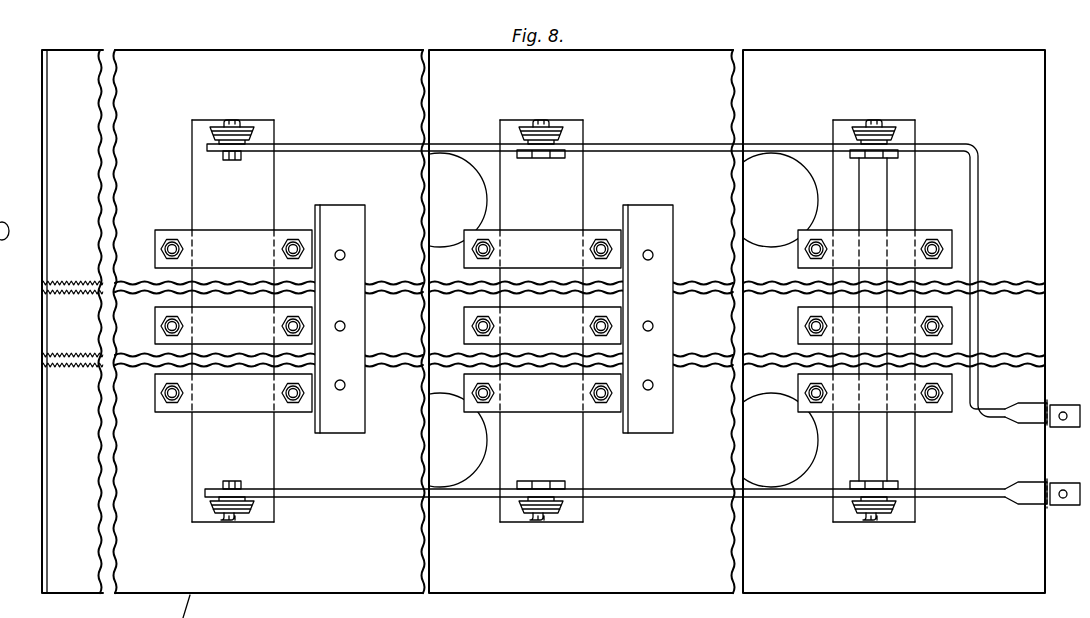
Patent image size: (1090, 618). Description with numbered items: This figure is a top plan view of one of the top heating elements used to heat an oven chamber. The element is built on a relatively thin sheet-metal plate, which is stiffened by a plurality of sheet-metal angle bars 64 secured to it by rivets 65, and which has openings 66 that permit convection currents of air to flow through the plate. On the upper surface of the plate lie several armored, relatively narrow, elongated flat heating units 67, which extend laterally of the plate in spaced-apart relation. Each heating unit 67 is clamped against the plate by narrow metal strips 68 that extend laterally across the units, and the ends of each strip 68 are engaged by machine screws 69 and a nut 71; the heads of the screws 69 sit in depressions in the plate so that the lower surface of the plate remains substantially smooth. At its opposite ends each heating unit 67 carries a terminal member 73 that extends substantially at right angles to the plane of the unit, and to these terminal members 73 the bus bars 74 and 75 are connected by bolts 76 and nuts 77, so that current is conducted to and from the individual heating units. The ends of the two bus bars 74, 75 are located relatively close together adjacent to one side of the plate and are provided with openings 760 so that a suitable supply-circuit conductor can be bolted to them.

The sheet-metal angle bar 64 is at (350, 402).
The rivet 65 is at (345, 325).
The opening 66 is at (452, 172).
The heating unit 67 is at (200, 190).
The metal strip 68 is at (280, 238).
The machine screw 69 is at (168, 254).
The nut 71 is at (161, 246).
The terminal member 73 is at (252, 132).
The bus bar 74 is at (655, 145).
The bus bar 75 is at (638, 498).
The bolt 76 is at (232, 122).
The nut 77 is at (236, 161).
The opening 760 is at (1063, 411).